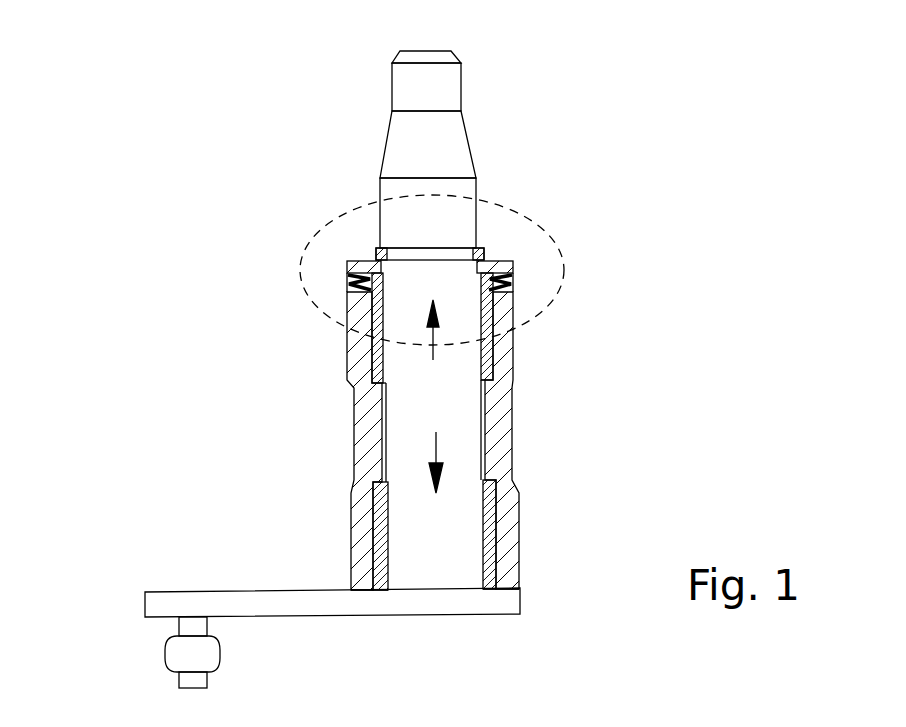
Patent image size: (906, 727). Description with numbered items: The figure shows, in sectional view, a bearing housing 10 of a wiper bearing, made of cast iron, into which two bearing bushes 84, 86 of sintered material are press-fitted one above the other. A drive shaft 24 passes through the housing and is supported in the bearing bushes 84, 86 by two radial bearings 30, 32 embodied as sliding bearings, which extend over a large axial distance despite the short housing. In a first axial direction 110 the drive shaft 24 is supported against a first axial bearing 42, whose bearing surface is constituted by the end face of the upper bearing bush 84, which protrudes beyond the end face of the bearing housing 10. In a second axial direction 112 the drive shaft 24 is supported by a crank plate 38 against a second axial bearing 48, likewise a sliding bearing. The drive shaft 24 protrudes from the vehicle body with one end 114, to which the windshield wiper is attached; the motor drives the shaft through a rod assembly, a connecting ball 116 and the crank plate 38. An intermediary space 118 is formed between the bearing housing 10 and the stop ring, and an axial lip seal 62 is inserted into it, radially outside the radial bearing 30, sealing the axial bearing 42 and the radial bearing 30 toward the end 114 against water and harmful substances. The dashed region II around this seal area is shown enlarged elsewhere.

The bearing housing 10 is at (507, 420).
The drive shaft 24 is at (453, 150).
The radial bearing 30 is at (377, 372).
The radial bearing 32 is at (385, 528).
The crank plate 38 is at (165, 605).
The first axial bearing 42 is at (357, 262).
The second axial bearing 48 is at (510, 588).
The axial lip seal 62 is at (510, 263).
The bearing bush 84 is at (488, 358).
The bearing bush 86 is at (488, 517).
The first axial direction 110 is at (436, 455).
The second axial direction 112 is at (430, 337).
The end of the drive shaft 114 is at (480, 59).
The connecting ball 116 is at (177, 657).
The intermediary space 118 is at (346, 264).
The region II is at (335, 210).